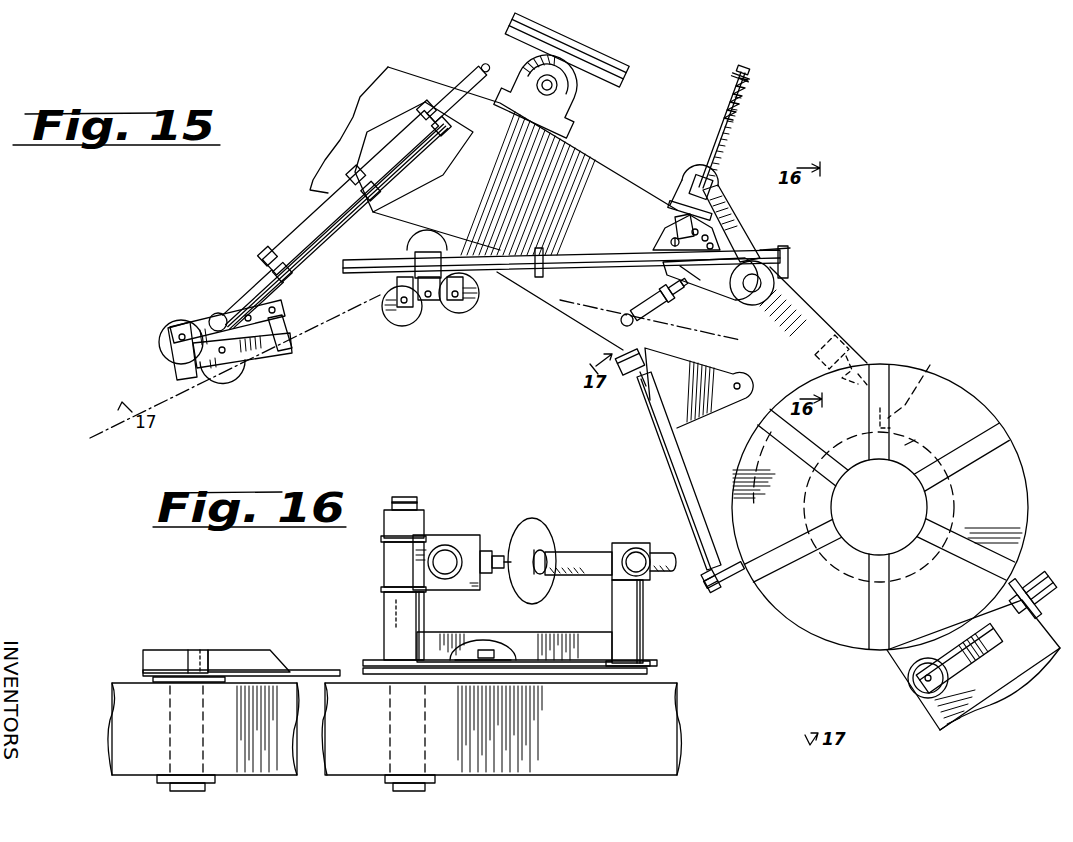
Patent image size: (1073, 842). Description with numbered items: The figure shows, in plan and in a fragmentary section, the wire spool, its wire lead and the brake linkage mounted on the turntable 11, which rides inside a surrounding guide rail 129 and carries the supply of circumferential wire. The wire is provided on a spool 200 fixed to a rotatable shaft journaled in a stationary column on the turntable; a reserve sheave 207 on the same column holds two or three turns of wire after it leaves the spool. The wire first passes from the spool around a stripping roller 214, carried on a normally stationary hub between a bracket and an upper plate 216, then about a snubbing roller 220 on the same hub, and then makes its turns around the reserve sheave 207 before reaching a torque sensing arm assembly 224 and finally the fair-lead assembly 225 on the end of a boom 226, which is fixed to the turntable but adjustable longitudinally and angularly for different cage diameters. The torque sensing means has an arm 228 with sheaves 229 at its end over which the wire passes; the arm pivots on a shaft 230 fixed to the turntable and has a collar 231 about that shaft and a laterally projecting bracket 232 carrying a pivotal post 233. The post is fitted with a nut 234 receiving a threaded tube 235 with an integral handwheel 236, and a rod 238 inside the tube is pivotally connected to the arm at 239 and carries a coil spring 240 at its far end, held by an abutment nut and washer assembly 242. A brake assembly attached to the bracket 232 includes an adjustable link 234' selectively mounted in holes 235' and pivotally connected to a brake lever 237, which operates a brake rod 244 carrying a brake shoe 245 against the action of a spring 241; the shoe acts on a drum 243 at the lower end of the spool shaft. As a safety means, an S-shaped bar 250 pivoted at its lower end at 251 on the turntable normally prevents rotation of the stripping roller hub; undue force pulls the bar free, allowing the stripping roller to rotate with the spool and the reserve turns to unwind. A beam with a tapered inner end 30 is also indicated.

In FIG. 15, the turntable 11 is at (826, 311).
In FIG. 16, the turntable 11 is at (690, 696).
In FIG. 15, the tapered inner end 30 is at (578, 98).
In FIG. 15, the guide rail 129 is at (630, 68).
In FIG. 15, the spool 200 is at (927, 505).
In FIG. 15, the reserve sheave 207 is at (955, 393).
In FIG. 15, the stripping roller 214 is at (912, 690).
In FIG. 15, the upper plate 216 is at (972, 652).
In FIG. 15, the snubbing roller 220 is at (1048, 581).
In FIG. 15, the torque sensing arm assembly 224 is at (520, 288).
In FIG. 16, the torque sensing arm assembly 224 is at (455, 533).
In FIG. 15, the fair-lead assembly 225 is at (246, 374).
In FIG. 15, the boom 226 is at (312, 226).
In FIG. 15, the arm 228 is at (596, 256).
In FIG. 15, the sheaves 229 is at (407, 325).
In FIG. 15, the shaft 230 is at (762, 283).
In FIG. 16, the shaft 230 is at (420, 503).
In FIG. 16, the collar 231 is at (385, 528).
In FIG. 15, the bracket 232 is at (792, 234).
In FIG. 16, the bracket 232 is at (657, 658).
In FIG. 16, the pivotal post 233 is at (645, 583).
In FIG. 15, the nut 234 is at (712, 192).
In FIG. 16, the nut 234 is at (644, 588).
In FIG. 15, the adjustable link 234' is at (678, 302).
In FIG. 15, the threaded tube 235 is at (736, 130).
In FIG. 16, the threaded tube 235 is at (580, 544).
In FIG. 15, the holes 235' is at (668, 232).
In FIG. 15, the handwheel 236 is at (735, 224).
In FIG. 16, the handwheel 236 is at (540, 525).
In FIG. 15, the brake lever 237 is at (615, 340).
In FIG. 16, the brake lever 237 is at (325, 665).
In FIG. 15, the rod 238 is at (748, 100).
In FIG. 15, the pivotal connection 239 is at (672, 241).
In FIG. 16, the pivotal connection 239 is at (496, 572).
In FIG. 15, the coil spring 240 is at (748, 82).
In FIG. 15, the spring 241 is at (845, 352).
In FIG. 15, the abutment nut and washer assembly 242 is at (752, 70).
In FIG. 15, the drum 243 is at (915, 446).
In FIG. 15, the brake rod 244 is at (921, 370).
In FIG. 15, the brake shoe 245 is at (893, 422).
In FIG. 15, the bar 250 is at (664, 440).
In FIG. 15, the pivot 251 is at (627, 375).